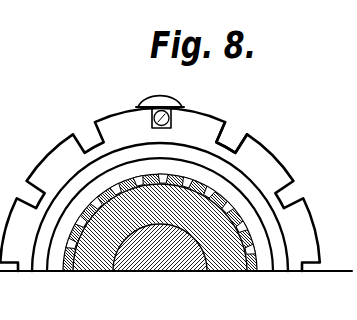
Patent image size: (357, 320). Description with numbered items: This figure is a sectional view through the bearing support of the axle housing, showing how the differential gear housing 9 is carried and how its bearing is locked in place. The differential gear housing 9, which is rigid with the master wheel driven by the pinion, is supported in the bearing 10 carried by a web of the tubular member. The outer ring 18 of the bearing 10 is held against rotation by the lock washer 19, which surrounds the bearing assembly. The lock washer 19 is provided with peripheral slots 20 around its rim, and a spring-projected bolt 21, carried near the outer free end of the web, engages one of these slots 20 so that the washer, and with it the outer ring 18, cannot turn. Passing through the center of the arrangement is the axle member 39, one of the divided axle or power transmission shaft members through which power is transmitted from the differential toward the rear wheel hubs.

The differential gear housing 9 is at (222, 222).
The bearing 10 is at (242, 198).
The outer ring 18 is at (235, 178).
The lock washer 19 is at (213, 123).
The peripheral slot 20 is at (238, 137).
The spring-projected bolt 21 is at (181, 107).
The axle member 39 is at (197, 263).